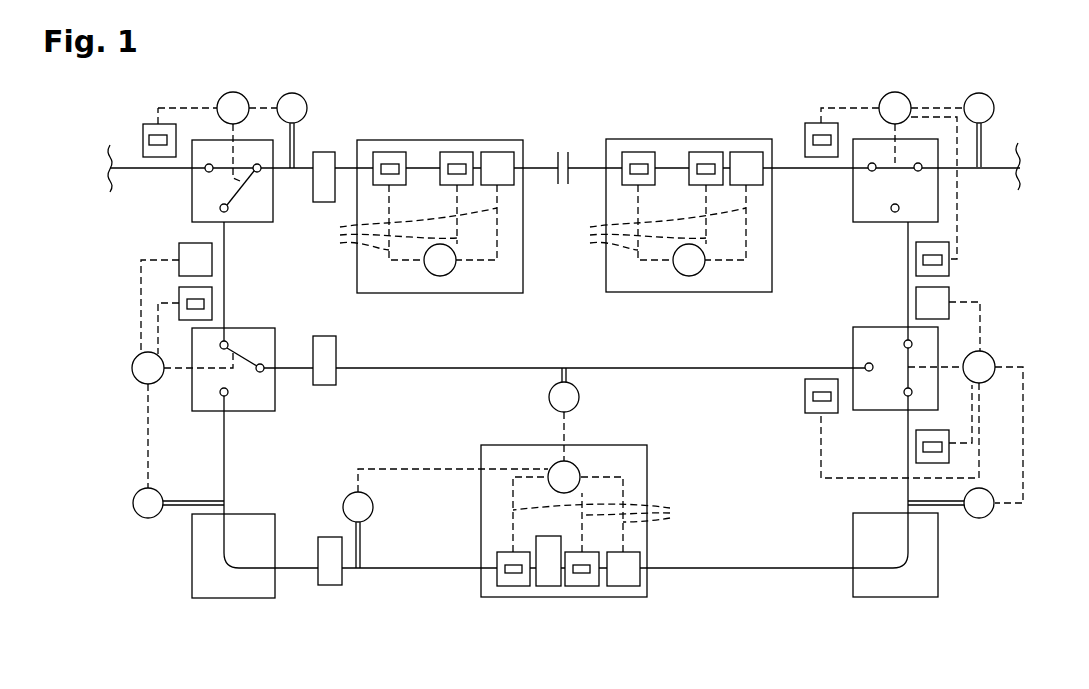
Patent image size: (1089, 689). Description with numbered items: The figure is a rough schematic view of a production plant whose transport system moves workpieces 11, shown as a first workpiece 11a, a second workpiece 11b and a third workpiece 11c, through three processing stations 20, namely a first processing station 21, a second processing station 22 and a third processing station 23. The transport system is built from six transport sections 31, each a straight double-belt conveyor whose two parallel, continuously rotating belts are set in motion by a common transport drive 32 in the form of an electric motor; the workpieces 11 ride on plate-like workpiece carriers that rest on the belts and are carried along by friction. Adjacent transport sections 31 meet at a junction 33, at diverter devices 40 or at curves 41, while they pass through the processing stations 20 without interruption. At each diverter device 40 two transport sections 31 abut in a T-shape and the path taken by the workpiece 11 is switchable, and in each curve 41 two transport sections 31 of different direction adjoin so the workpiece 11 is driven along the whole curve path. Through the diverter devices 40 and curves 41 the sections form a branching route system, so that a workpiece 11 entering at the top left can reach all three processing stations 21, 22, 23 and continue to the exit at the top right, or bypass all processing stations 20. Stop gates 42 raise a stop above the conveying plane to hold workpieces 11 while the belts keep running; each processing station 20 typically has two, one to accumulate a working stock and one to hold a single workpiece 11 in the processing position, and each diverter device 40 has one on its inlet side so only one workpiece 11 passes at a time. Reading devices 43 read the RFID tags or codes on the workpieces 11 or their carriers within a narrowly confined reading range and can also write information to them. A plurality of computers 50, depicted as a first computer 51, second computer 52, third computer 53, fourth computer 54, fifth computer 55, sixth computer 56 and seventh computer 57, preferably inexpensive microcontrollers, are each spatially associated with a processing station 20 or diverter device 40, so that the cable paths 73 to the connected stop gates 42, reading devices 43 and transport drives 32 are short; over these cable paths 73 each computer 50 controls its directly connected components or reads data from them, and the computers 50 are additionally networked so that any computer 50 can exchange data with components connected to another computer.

The workpiece 11 is at (436, 361).
The first workpiece 11a is at (323, 152).
The second workpiece 11b is at (330, 585).
The third workpiece 11c is at (328, 385).
The processing station 20 is at (564, 330).
The first processing station 21 is at (422, 140).
The second processing station 22 is at (672, 139).
The third processing station 23 is at (481, 509).
The transport section 31 is at (224, 236).
The transport drive 32 is at (293, 93).
The junction between two adjacent transport sections 33 is at (563, 150).
The diverter device 40 is at (192, 195).
The curve 41 is at (226, 598).
The stop gate 42 is at (143, 141).
The reading device 43 is at (212, 264).
The computer 50 is at (567, 294).
The first computer 51 is at (448, 274).
The second computer 52 is at (695, 274).
The third computer 53 is at (552, 470).
The fourth computer 54 is at (233, 92).
The fifth computer 55 is at (896, 92).
The sixth computer 56 is at (132, 368).
The seventh computer 57 is at (987, 354).
The cable path for data exchange 73 is at (158, 108).